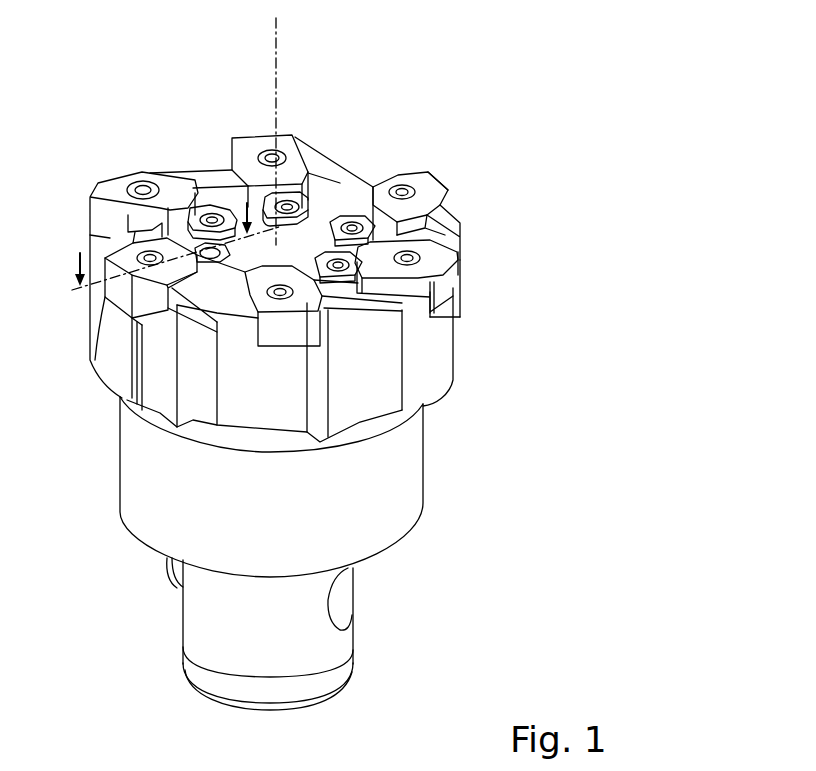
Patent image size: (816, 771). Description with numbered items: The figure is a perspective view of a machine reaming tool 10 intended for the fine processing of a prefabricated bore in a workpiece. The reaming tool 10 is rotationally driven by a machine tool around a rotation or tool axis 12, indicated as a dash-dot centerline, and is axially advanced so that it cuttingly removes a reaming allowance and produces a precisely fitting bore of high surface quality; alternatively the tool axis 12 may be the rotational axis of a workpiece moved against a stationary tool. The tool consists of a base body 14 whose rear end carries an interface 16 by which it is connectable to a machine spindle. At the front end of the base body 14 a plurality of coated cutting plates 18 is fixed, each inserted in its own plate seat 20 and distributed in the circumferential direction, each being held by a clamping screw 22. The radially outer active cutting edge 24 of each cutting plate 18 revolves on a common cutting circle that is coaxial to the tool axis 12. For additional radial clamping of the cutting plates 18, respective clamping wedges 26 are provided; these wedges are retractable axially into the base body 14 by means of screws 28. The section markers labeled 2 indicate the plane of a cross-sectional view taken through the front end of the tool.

The section line 2- 2 is at (169, 246).
The reaming tool 10 is at (124, 162).
The tool axis 12 is at (275, 102).
The base body 14 is at (462, 351).
The interface 16 is at (353, 650).
The cutting plate 18 is at (428, 183).
The plate seat 20 is at (447, 190).
The clamping screw 22 is at (404, 183).
The active cutting edge 24 is at (420, 167).
The clamping wedge 26 is at (328, 224).
The screw 28 is at (352, 229).